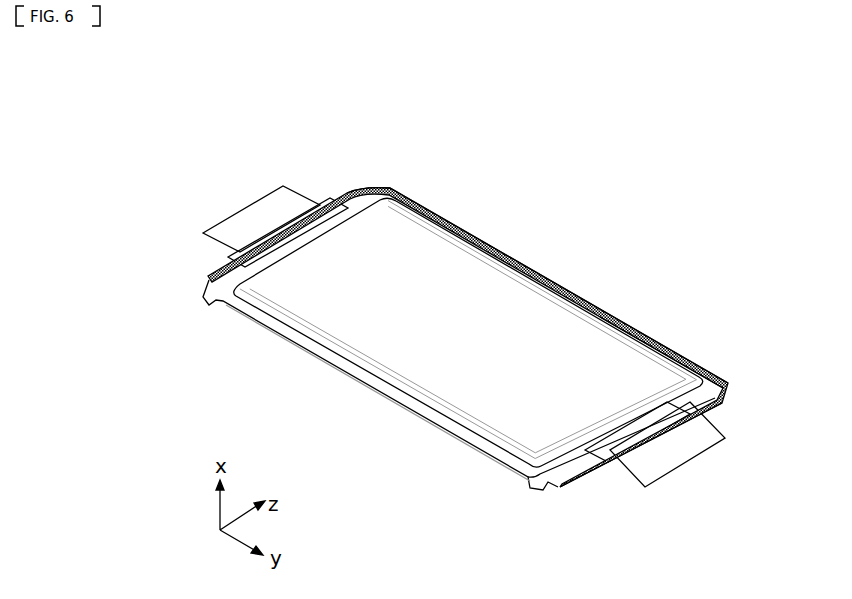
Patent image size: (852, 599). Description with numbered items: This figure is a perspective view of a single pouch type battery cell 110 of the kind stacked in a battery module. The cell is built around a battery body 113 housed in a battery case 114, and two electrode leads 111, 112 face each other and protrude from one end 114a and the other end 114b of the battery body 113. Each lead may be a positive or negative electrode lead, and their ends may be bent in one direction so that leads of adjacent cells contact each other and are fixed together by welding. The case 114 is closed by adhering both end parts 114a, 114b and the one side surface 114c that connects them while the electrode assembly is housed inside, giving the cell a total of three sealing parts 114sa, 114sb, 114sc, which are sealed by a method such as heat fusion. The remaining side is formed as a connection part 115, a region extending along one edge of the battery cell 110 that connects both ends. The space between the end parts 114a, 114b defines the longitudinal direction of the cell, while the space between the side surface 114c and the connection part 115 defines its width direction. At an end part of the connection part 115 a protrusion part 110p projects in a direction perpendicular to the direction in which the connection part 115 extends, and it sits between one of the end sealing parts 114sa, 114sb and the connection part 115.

The battery cell 110 is at (162, 84).
The protrusion part 110p is at (208, 294).
The electrode lead 111 is at (258, 214).
The electrode lead 112 is at (693, 462).
The battery body 113 is at (476, 265).
The battery case 114 is at (725, 380).
The one end of the battery case 114a is at (365, 198).
The other end of the battery case 114b is at (563, 477).
The side surface 114c is at (565, 287).
The sealing part 114sa is at (345, 190).
The sealing part 114sb is at (718, 402).
The sealing part 114sc is at (650, 333).
The connection part 115 is at (397, 396).